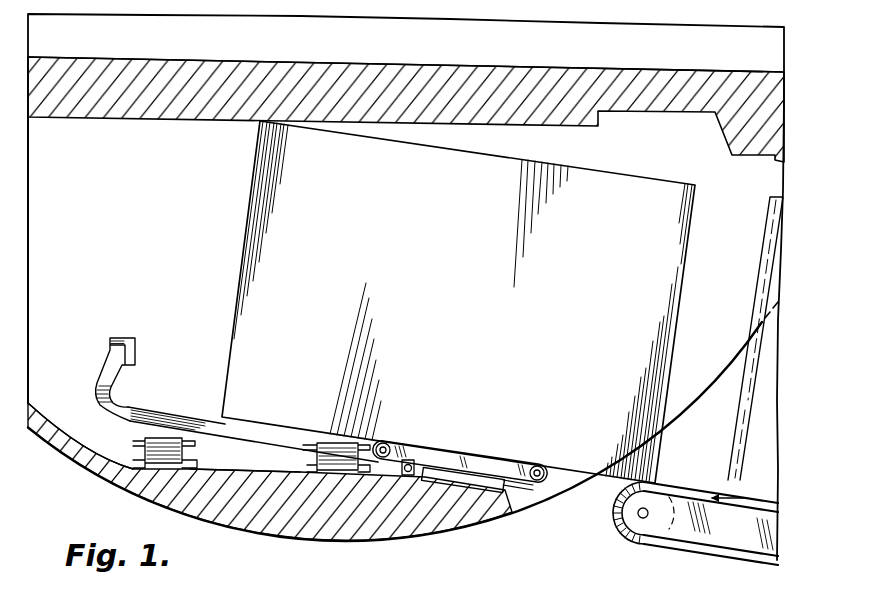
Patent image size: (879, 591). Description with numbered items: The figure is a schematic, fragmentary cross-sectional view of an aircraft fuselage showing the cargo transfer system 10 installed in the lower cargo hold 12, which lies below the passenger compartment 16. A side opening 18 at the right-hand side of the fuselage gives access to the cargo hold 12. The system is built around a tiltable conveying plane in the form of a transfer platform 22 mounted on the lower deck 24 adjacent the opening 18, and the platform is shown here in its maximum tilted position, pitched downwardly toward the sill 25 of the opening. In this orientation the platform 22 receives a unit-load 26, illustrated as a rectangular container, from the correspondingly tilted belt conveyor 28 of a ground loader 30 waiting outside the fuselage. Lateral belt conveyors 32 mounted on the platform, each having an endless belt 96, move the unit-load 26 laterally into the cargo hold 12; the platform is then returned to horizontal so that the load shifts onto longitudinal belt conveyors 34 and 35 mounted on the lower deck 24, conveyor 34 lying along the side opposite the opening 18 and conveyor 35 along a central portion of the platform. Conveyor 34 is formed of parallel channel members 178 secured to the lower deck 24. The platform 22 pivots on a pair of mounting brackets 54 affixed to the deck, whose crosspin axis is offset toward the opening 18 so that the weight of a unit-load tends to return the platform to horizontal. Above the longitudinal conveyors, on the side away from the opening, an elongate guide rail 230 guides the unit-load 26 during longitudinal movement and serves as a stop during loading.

The cargo transfer system 10 is at (600, 567).
The cargo hold 12 is at (96, 153).
The passenger compartment 16 is at (146, 45).
The side opening 18 is at (731, 305).
The transfer platform 22 is at (160, 368).
The lower deck 24 is at (253, 467).
The sill 25 is at (507, 498).
The unit-load 26 is at (476, 240).
The belt conveyor 28 is at (703, 484).
The ground loader 30 is at (690, 548).
The lateral belt conveyors 32 is at (543, 482).
The longitudinal belt conveyor 34 is at (118, 436).
The longitudinal belt conveyor 35 is at (346, 476).
The mounting bracket 54 is at (408, 474).
The endless belt 96 is at (440, 484).
The channel members 178 is at (192, 463).
The guide rail 230 is at (113, 340).